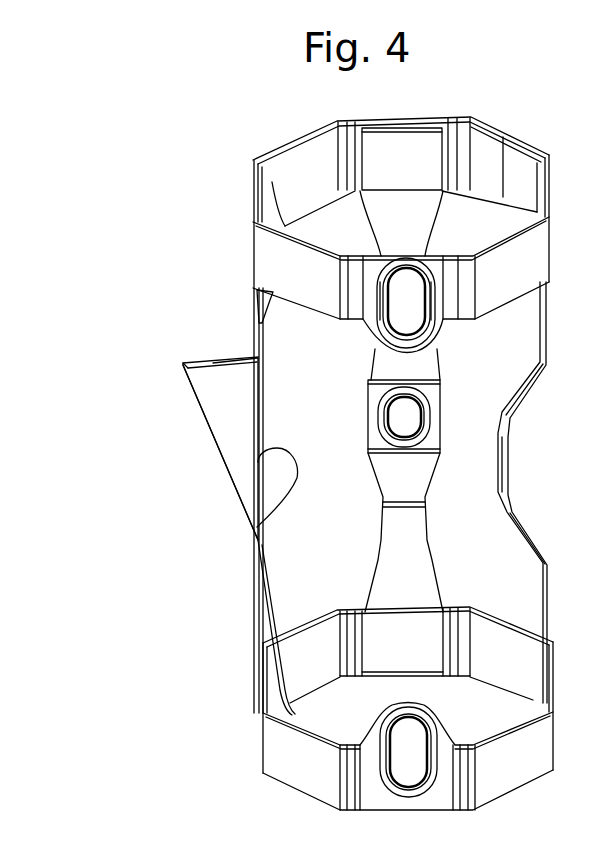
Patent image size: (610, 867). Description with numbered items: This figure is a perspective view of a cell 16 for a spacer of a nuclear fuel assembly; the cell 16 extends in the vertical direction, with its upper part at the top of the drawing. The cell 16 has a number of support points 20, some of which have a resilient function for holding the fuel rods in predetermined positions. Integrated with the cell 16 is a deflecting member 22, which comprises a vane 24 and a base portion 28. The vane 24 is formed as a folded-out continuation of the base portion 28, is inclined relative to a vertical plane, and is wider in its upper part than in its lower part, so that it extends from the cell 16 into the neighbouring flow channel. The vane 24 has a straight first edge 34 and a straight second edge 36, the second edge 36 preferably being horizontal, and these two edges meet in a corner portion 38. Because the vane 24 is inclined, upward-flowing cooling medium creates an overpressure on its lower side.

The cell 16 is at (188, 166).
The support points 20 is at (347, 496).
The deflecting member 22 is at (148, 344).
The vane 24 is at (233, 432).
The base portion 28 is at (257, 527).
The first edge 34 is at (207, 420).
The second edge 36 is at (213, 360).
The corner portion 38 is at (183, 366).